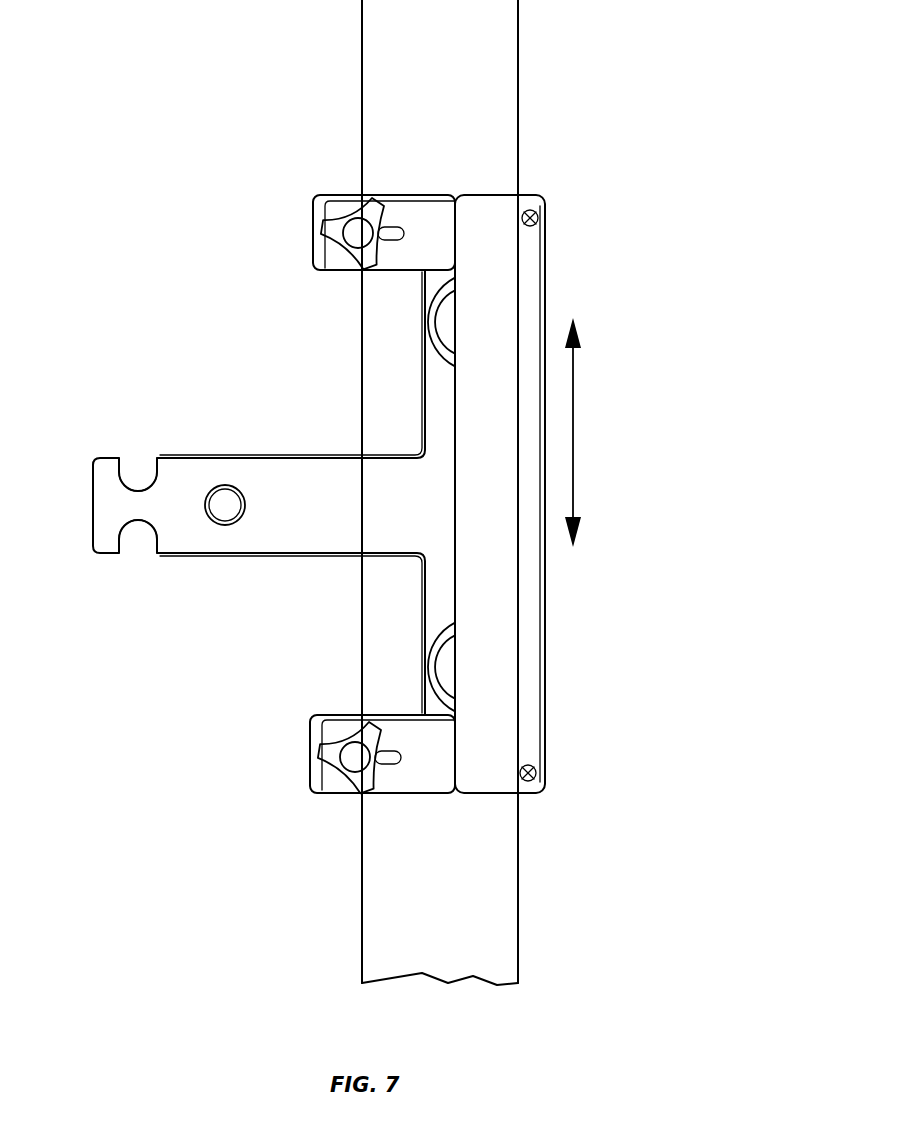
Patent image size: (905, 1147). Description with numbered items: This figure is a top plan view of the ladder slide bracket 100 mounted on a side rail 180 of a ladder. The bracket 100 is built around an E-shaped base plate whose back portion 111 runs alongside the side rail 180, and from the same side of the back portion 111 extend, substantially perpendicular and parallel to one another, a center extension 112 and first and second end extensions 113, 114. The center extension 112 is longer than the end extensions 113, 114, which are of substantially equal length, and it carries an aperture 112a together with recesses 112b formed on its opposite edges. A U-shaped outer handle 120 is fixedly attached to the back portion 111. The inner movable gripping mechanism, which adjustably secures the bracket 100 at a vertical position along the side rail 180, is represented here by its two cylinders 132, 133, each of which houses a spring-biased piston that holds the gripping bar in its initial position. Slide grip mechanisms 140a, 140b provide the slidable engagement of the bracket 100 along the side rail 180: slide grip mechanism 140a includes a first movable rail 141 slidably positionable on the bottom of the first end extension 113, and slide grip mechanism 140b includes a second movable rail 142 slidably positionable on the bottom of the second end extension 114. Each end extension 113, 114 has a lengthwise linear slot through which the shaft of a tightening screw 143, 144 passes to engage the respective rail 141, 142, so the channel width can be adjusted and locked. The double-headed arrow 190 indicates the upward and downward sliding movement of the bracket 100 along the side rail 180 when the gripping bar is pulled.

The bracket 100 is at (170, 302).
The back portion 111 is at (530, 560).
The center extension 112 is at (220, 492).
The aperture 112a is at (225, 520).
The recesses 112b is at (86, 509).
The first end extension 113 is at (326, 190).
The second end extension 114 is at (317, 778).
The outer handle 120 is at (550, 477).
The cylinder 132 is at (445, 305).
The cylinder 133 is at (445, 685).
The slide grip mechanism 140a is at (313, 198).
The slide grip mechanism 140b is at (300, 722).
The first movable rail 141 is at (326, 204).
The second movable rail 142 is at (317, 747).
The tightening screw 143 is at (338, 240).
The tightening screw 144 is at (338, 790).
The side rail 180 is at (483, 60).
The direction of adjustment 190 is at (573, 437).